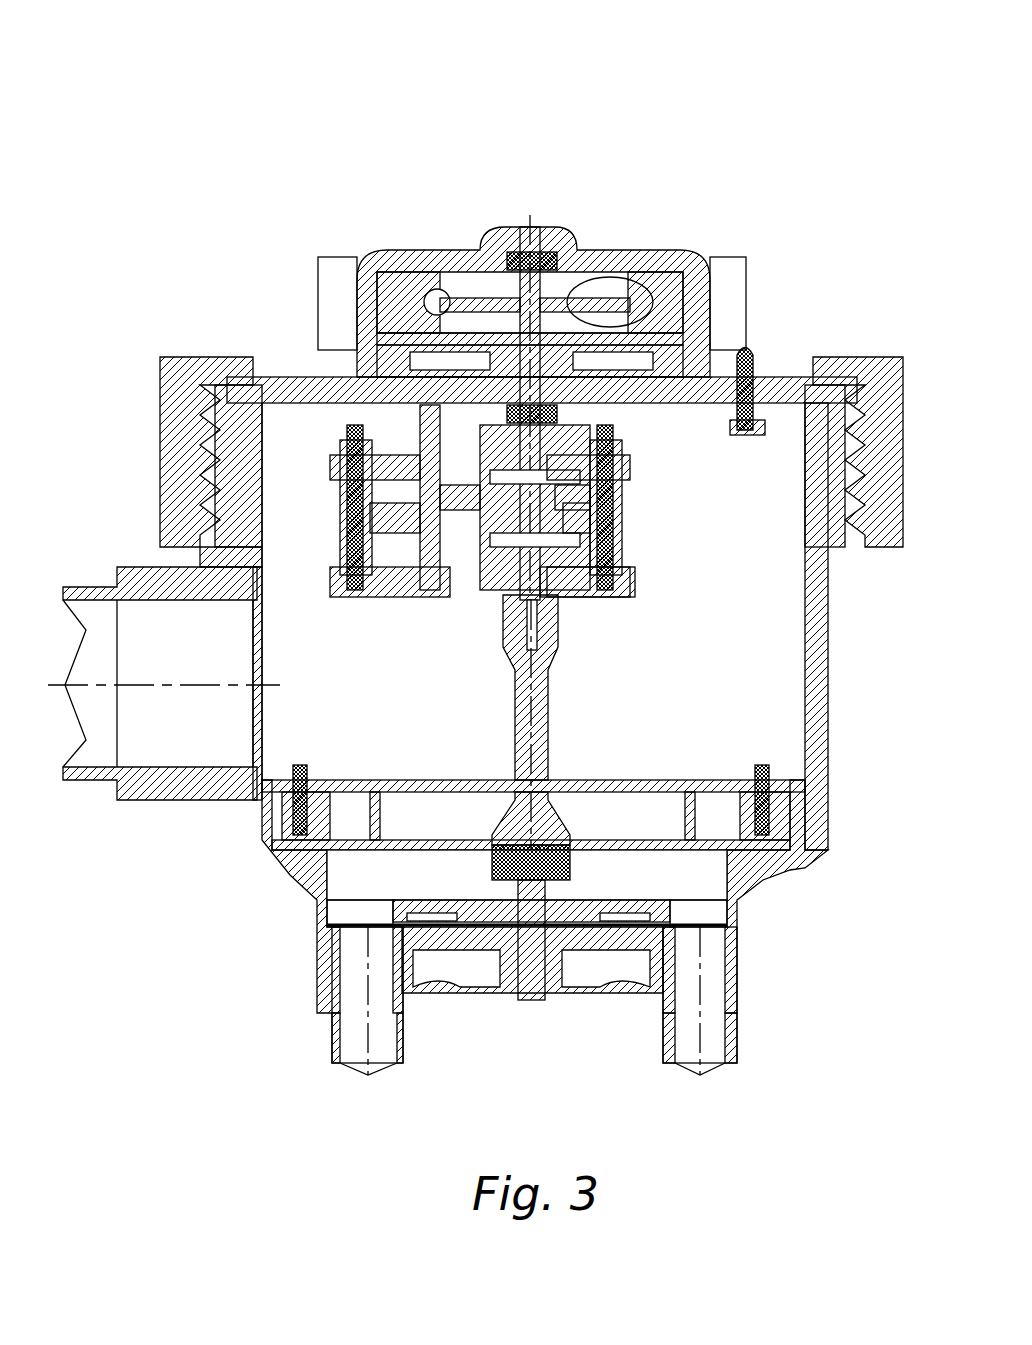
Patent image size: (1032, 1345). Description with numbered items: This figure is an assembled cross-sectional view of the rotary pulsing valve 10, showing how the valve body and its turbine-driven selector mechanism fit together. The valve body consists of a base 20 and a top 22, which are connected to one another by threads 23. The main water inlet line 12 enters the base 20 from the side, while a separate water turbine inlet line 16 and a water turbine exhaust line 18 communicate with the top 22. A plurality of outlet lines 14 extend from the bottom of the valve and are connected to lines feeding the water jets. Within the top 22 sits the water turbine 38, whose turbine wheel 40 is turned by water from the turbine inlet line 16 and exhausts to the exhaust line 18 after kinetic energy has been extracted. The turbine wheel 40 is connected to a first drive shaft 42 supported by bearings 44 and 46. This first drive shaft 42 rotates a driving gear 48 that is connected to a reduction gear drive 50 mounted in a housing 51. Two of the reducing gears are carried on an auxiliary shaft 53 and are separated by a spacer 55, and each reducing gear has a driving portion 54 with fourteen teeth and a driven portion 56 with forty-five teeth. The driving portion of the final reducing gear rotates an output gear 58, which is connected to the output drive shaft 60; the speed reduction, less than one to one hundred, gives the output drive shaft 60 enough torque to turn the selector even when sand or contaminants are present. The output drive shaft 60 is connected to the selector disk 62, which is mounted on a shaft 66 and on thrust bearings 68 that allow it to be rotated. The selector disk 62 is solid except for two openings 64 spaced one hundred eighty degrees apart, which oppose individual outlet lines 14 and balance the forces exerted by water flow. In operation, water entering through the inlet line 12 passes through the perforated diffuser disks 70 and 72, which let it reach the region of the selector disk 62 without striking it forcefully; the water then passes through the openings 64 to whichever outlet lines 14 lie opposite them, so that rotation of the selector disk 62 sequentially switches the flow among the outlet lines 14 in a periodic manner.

The rotary pulsing valve 10 is at (750, 110).
The inlet line 12 is at (205, 678).
The outlet lines 14 is at (332, 1050).
The water turbine inlet line 16 is at (320, 283).
The water turbine exhaust line 18 is at (735, 283).
The base 20 is at (830, 600).
The top 22 is at (705, 305).
The threads 23 is at (857, 427).
The water turbine 38 is at (325, 205).
The turbine wheel 40 is at (455, 265).
The first drive shaft 42 is at (540, 310).
The bearing 44 is at (563, 262).
The bearing 46 is at (560, 432).
The driving gear 48 is at (600, 470).
The reduction gear drive 50 is at (700, 585).
The housing 51 is at (595, 562).
The auxiliary shaft 53 is at (430, 590).
The driving portion 54 is at (393, 580).
The spacer 55 is at (355, 445).
The driven portion 56 is at (465, 565).
The output gear 58 is at (567, 578).
The output drive shaft 60 is at (550, 717).
The selector disk 62 is at (760, 905).
The openings 64 is at (362, 905).
The shaft 66 is at (520, 1000).
The thrust bearings 68 is at (530, 990).
The diffuser disk 70 is at (800, 790).
The diffuser disk 72 is at (770, 862).